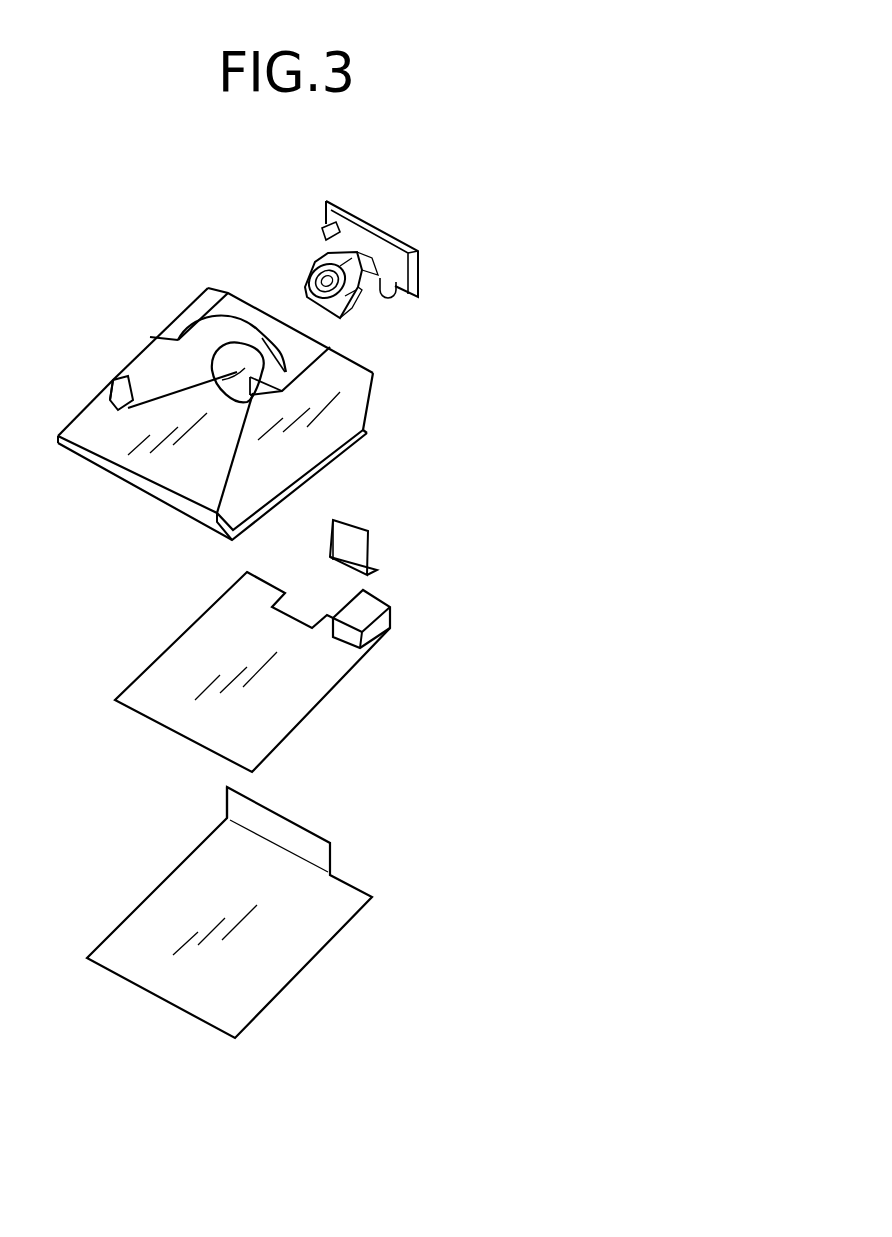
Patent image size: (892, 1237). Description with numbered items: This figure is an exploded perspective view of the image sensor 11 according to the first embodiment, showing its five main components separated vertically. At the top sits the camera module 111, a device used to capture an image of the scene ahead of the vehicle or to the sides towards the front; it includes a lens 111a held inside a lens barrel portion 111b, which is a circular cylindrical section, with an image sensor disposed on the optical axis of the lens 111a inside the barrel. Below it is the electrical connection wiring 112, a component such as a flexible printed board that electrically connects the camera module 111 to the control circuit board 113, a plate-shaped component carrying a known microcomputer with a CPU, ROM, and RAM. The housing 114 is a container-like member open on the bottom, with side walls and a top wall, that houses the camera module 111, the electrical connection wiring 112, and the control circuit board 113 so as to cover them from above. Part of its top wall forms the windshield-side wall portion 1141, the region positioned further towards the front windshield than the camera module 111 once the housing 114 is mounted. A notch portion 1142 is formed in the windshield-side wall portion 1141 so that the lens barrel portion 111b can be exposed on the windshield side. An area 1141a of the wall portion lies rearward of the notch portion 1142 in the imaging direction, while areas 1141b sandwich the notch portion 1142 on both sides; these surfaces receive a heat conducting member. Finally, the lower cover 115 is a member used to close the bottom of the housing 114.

The image sensor 11 is at (607, 582).
The camera module 111 is at (405, 198).
The lens 111a is at (307, 272).
The lens barrel portion 111b is at (361, 289).
The electrical connection wiring 112 is at (347, 540).
The control circuit board 113 is at (303, 677).
The housing 114 is at (390, 413).
The windshield-side wall portion 1141 is at (150, 337).
The area 1141a is at (264, 330).
The areas 1141b is at (205, 352).
The notch portion 1142 is at (150, 362).
The lower cover 115 is at (323, 903).